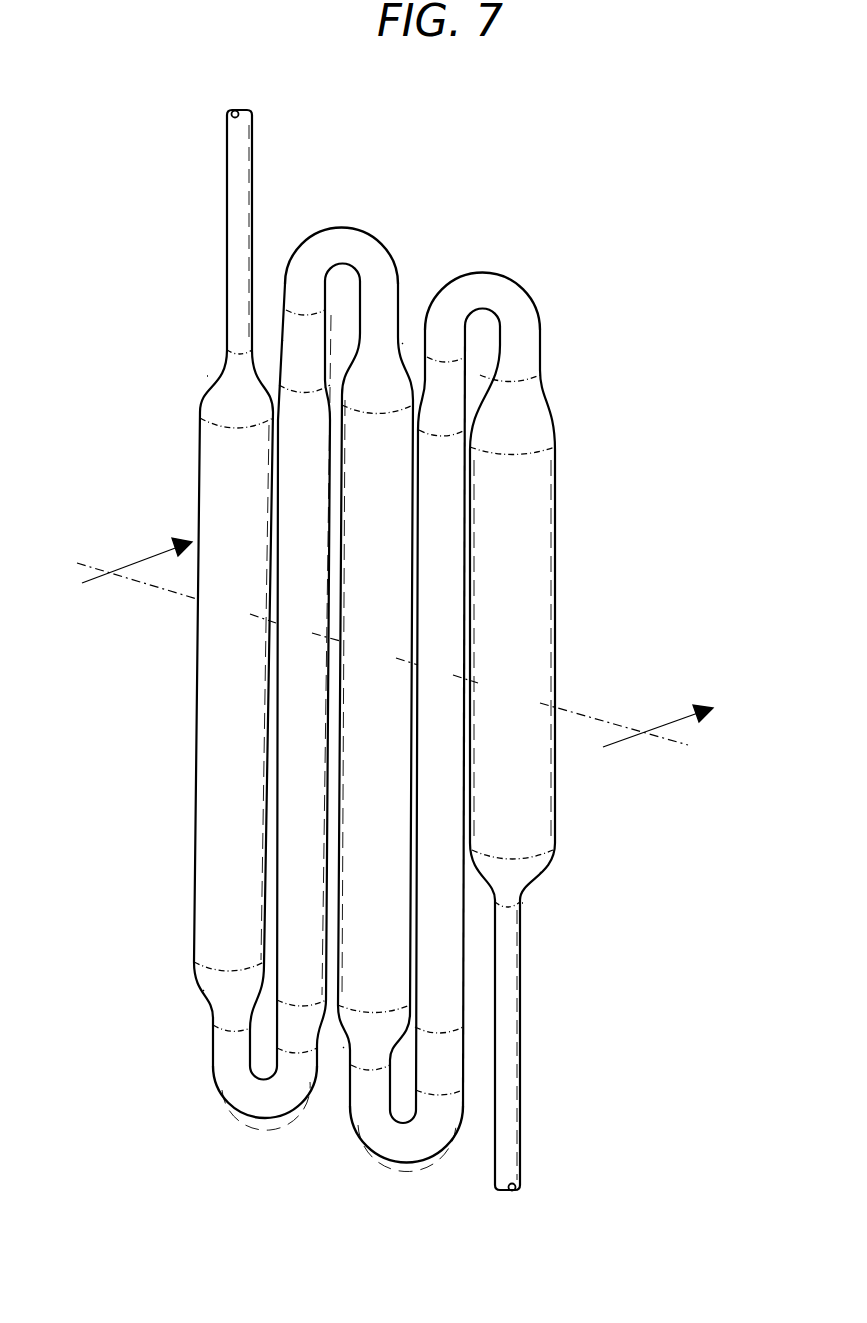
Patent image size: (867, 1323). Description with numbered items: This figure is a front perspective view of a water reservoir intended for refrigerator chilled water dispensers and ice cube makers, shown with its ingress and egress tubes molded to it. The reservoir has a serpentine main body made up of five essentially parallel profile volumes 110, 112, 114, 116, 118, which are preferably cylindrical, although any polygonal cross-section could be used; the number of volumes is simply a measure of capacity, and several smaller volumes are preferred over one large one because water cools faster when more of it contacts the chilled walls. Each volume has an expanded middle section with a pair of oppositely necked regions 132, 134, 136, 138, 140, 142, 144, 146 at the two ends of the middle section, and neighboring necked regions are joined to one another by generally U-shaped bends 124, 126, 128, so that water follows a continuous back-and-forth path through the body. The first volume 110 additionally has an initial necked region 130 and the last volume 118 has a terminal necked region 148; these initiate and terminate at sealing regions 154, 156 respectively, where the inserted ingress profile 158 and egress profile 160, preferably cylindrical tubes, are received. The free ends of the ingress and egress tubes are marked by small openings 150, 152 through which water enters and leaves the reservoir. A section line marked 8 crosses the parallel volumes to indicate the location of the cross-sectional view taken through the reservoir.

The section line 8- 8 is at (396, 642).
The first volume 110 is at (512, 613).
The profile volume 112 is at (440, 718).
The profile volume 114 is at (375, 695).
The profile volume 116 is at (304, 673).
The last volume 118 is at (233, 708).
The U-shaped bend 124 is at (400, 1163).
The U-shaped bend 126 is at (333, 227).
The U-shaped bend 128 is at (260, 1118).
The initial necked region 130 is at (540, 872).
The necked region 132 is at (497, 273).
The necked region 134 is at (468, 377).
The necked region 136 is at (413, 1067).
The necked region 138 is at (343, 1047).
The necked region 140 is at (403, 343).
The necked region 142 is at (282, 340).
The necked region 144 is at (277, 1020).
The necked region 146 is at (203, 990).
The terminal necked region 148 is at (207, 376).
The inlet opening 150 is at (232, 111).
The outlet opening 152 is at (507, 1193).
The sealing region 154 is at (523, 903).
The sealing region 156 is at (227, 348).
The ingress profile 158 is at (519, 1047).
The egress profile 160 is at (226, 200).